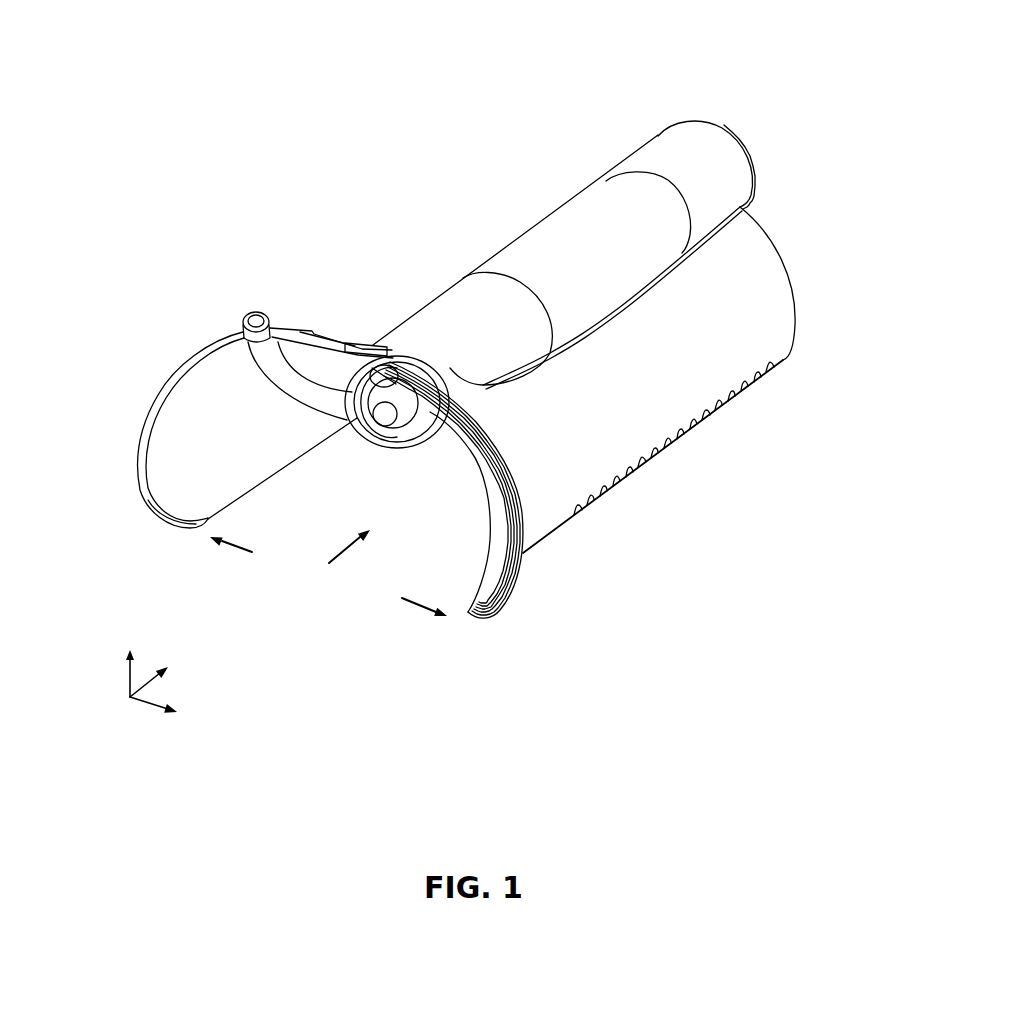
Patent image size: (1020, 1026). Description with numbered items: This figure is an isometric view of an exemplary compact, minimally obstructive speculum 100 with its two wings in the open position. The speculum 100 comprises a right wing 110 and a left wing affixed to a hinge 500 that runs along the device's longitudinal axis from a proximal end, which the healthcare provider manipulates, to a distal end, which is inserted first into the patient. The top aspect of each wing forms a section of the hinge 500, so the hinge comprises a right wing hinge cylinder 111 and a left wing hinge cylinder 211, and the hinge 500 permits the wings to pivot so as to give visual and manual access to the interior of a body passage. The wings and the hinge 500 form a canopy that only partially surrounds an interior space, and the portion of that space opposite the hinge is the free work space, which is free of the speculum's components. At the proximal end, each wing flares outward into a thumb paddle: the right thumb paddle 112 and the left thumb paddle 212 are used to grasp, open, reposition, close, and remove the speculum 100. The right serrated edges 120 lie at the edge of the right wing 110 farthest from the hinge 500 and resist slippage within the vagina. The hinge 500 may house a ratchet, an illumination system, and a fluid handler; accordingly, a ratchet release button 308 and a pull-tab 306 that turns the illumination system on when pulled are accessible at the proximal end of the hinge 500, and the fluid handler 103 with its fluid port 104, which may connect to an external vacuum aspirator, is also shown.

The speculum 100 is at (724, 75).
The fluid handler 103 is at (280, 343).
The fluid port 104 is at (256, 312).
The right wing 110 is at (762, 323).
The right wing hinge cylinder 111 is at (653, 177).
The right thumb paddle 112 is at (524, 565).
The right serrated edges 120 is at (657, 453).
The left wing hinge cylinder 211 is at (537, 237).
The left thumb paddle 212 is at (163, 387).
The pull-tab 306 is at (387, 378).
The ratchet release button 308 is at (393, 430).
The hinge 500 is at (556, 198).